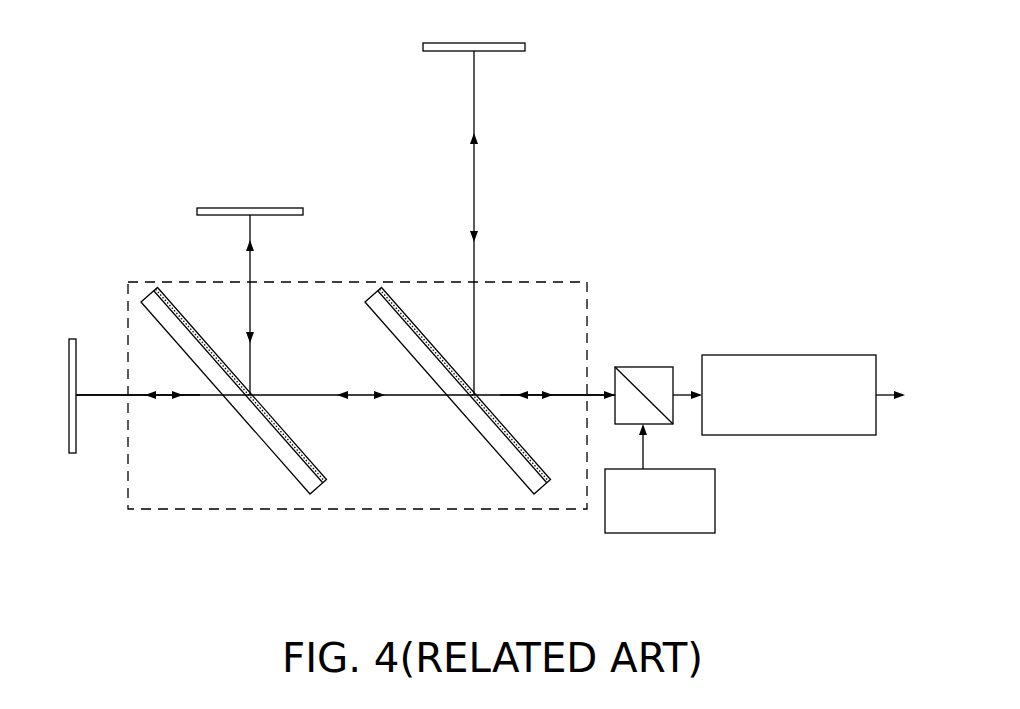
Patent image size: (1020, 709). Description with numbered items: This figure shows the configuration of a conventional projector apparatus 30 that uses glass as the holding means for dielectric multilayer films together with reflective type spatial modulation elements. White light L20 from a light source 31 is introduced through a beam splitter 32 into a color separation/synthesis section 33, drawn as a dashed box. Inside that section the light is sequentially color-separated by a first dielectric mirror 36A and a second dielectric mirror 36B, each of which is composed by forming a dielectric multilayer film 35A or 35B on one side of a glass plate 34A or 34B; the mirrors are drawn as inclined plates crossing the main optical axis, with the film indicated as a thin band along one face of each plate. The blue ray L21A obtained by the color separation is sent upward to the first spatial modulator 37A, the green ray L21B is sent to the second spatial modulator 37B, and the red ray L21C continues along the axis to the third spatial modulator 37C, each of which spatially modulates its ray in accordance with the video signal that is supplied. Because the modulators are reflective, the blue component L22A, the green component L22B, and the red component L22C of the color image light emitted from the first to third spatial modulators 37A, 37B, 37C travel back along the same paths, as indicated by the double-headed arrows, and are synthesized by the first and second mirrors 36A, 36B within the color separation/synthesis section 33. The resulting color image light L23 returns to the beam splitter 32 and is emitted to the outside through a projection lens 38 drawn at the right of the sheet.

The projector apparatus 30 is at (835, 569).
The light source 31 is at (715, 508).
The beam splitter 32 is at (646, 366).
The color separation/synthesis section 33 is at (541, 509).
The glass plate 34A is at (366, 300).
The glass plate 34B is at (141, 305).
The dielectric multilayer film 35A is at (386, 287).
The dielectric multilayer film 35B is at (165, 292).
The first dielectric mirror 36A is at (433, 369).
The second dielectric mirror 36B is at (239, 371).
The first spatial modulator 37A is at (517, 51).
The second spatial modulator 37B is at (225, 208).
The third spatial modulator 37C is at (72, 453).
The projection lens 38 is at (775, 435).
The white light L20 is at (643, 452).
The blue ray L21A is at (548, 223).
The blue component L22A is at (474, 186).
The green ray L21B is at (314, 305).
The green component L22B is at (250, 325).
The red ray L21C is at (165, 427).
The red component L22C is at (165, 400).
The color image light L23 is at (537, 392).